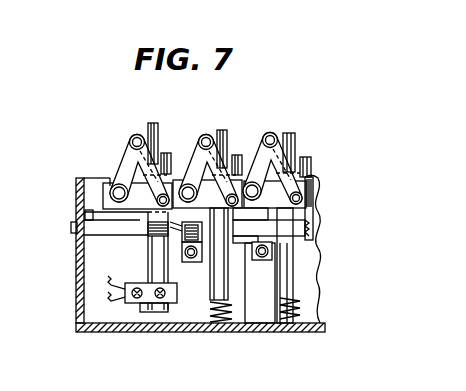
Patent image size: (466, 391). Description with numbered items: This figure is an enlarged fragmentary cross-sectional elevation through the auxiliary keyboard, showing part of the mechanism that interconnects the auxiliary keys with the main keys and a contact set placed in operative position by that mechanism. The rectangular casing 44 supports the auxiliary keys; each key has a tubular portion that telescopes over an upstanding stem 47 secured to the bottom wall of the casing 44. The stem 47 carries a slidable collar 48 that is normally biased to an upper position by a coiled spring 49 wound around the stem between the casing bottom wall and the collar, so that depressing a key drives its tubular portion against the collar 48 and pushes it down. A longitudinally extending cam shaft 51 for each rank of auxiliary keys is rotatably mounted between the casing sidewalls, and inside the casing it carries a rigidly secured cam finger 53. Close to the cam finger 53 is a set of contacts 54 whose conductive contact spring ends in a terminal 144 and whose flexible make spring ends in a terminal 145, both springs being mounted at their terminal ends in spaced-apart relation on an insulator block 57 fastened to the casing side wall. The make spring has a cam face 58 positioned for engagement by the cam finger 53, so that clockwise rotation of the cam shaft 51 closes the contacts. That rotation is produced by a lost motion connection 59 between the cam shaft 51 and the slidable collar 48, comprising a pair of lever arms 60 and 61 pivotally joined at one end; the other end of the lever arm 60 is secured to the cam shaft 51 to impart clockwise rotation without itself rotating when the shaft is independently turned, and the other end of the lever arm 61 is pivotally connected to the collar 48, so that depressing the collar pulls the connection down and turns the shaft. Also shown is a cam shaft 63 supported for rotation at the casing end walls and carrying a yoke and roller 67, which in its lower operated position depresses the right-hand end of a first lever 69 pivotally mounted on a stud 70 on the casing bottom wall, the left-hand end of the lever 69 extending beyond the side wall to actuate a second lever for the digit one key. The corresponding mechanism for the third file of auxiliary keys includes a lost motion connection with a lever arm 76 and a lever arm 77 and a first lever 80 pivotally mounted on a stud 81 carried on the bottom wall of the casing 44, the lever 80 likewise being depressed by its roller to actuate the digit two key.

The casing 44 is at (166, 327).
The upstanding stem 47 is at (139, 129).
The slidable collar 48 is at (142, 184).
The coiled spring 49 is at (294, 303).
The cam shaft 51 is at (88, 193).
The cam finger 53 is at (118, 220).
The set of contacts 54 is at (146, 269).
The insulator block 57 is at (135, 302).
The cam face 58 is at (151, 226).
The lost motion connection 59 is at (119, 150).
The lever arm 60 is at (124, 171).
The lever arm 61 is at (165, 143).
The cam shaft 63 is at (95, 221).
The yoke and roller 67 is at (197, 237).
The first lever 69 is at (190, 258).
The stud 70 is at (206, 316).
The lever arm 76 is at (304, 158).
The lever arm 77 is at (313, 178).
The first lever 80 is at (263, 258).
The stud 81 is at (258, 294).
The terminal 144 is at (108, 279).
The terminal 145 is at (108, 295).